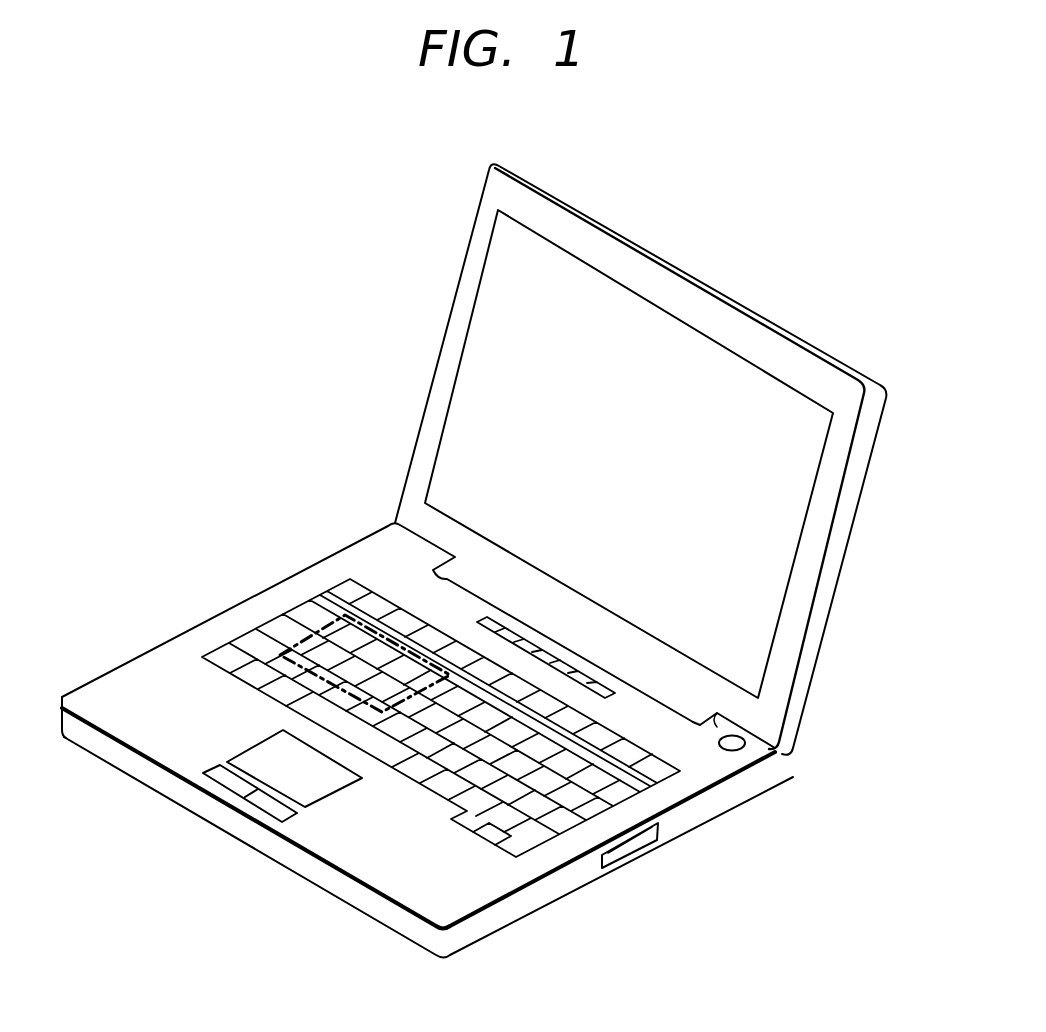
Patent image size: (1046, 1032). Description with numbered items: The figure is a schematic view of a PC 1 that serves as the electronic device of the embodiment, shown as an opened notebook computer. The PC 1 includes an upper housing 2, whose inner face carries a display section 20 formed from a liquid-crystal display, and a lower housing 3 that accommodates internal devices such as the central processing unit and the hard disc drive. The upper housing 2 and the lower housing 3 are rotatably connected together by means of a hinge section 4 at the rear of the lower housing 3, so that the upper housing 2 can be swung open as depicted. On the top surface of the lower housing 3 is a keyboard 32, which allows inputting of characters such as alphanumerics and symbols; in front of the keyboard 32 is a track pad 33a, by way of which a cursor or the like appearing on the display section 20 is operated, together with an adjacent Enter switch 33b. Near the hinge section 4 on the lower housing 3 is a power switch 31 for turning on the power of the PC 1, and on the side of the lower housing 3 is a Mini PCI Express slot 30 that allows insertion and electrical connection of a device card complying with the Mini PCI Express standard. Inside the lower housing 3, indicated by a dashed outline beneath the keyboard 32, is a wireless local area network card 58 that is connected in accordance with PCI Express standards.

The PC 1 is at (738, 162).
The upper housing 2 is at (838, 552).
The display section 20 is at (607, 297).
The lower housing 3 is at (518, 910).
The hinge section 4 is at (717, 727).
The Mini PCI Express slot 30 is at (633, 847).
The power switch 31 is at (738, 750).
The keyboard 32 is at (242, 632).
The wireless local area network (LAN) card 58 is at (337, 613).
The track pad 33a is at (310, 788).
The Enter switch 33b is at (270, 803).